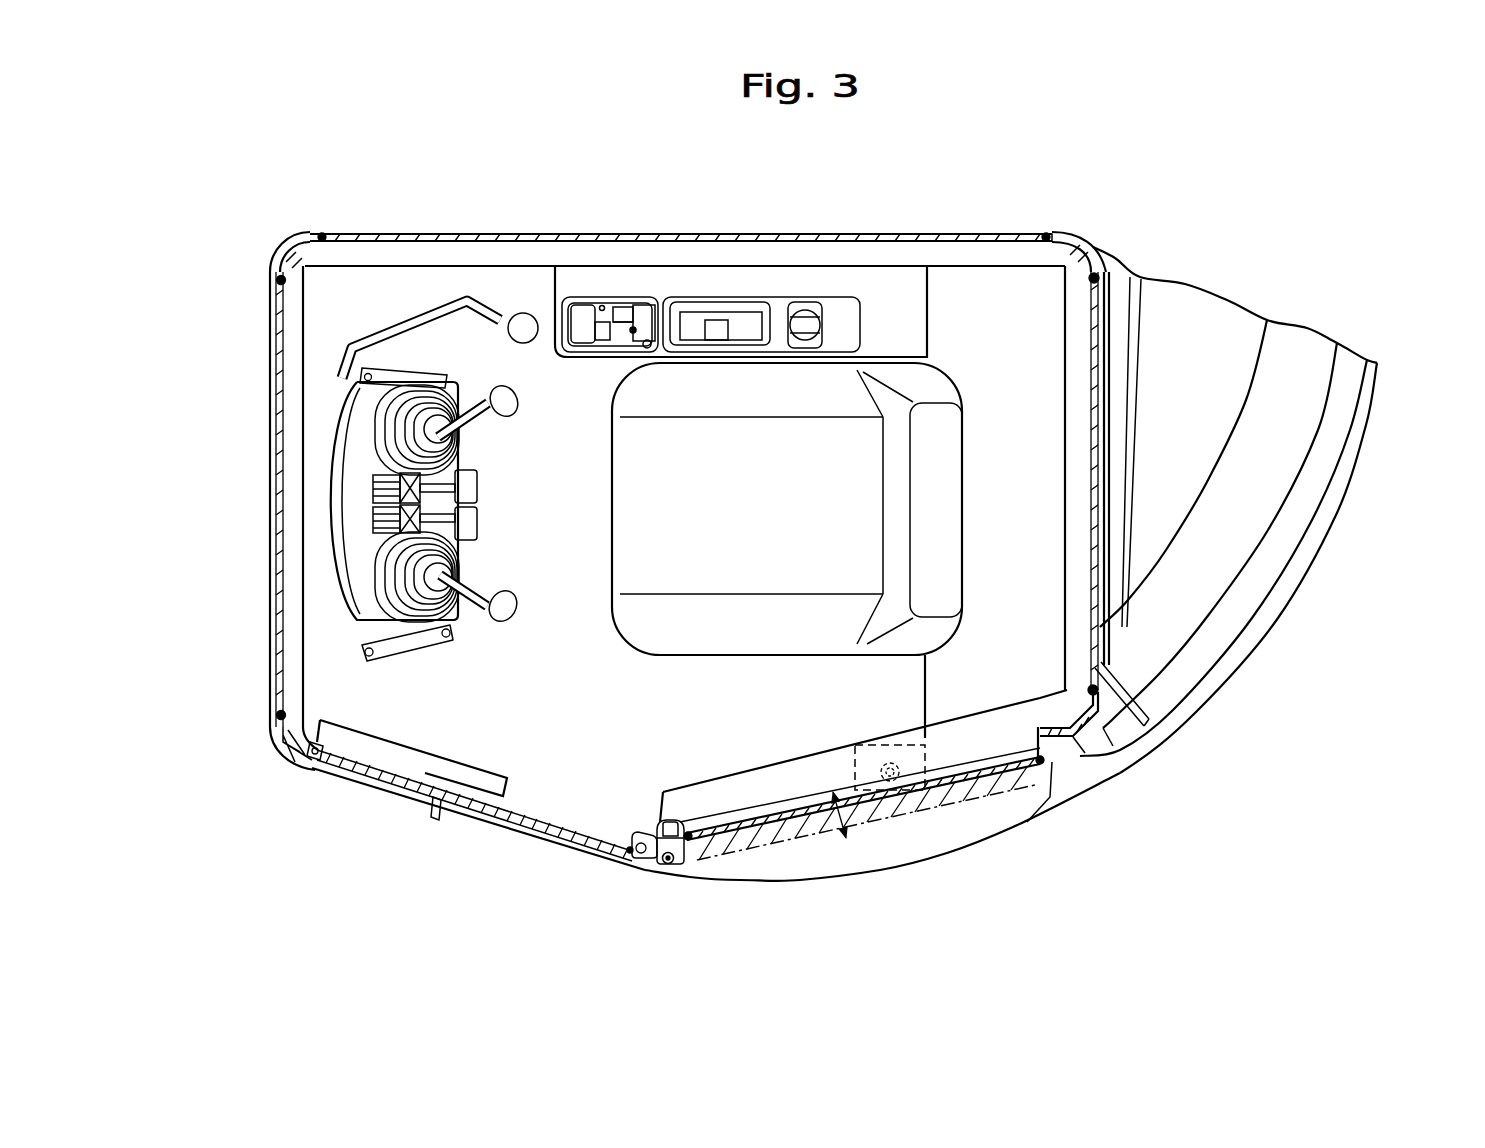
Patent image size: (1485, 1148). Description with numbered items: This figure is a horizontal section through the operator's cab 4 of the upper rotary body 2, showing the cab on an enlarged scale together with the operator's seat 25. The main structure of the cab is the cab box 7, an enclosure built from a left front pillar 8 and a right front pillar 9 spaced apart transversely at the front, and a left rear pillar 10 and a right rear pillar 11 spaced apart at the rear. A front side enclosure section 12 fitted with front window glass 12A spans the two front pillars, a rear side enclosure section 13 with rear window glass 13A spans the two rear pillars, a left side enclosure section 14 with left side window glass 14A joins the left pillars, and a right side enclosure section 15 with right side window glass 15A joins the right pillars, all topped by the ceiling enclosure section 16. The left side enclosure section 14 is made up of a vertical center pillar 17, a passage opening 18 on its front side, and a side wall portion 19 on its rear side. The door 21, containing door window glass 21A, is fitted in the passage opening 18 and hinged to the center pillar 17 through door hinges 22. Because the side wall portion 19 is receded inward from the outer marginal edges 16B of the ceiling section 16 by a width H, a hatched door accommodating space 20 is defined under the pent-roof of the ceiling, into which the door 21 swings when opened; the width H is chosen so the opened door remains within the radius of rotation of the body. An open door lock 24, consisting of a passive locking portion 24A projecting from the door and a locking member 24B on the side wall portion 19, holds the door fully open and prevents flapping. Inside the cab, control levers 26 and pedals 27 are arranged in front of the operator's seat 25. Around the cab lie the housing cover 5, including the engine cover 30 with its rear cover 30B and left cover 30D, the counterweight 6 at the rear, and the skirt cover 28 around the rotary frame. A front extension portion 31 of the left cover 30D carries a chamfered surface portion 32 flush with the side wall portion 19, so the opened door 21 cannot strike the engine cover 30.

The upper rotary body 2 is at (1292, 627).
The operator's cab 4 is at (789, 234).
The housing cover 5 is at (1315, 455).
The counterweight 6 is at (1326, 540).
The cab box 7 is at (990, 238).
The left front pillar 8 is at (276, 747).
The right front pillar 9 is at (298, 240).
The left rear pillar 10 is at (1068, 764).
The right rear pillar 11 is at (1082, 240).
The front side enclosure section 12 is at (268, 428).
The front window glass 12A is at (272, 520).
The rear side enclosure section 13 is at (1102, 358).
The rear window glass 13A is at (1103, 308).
The left side enclosure section 14 is at (648, 872).
The left side window glass 14A is at (807, 815).
The right side enclosure section 15 is at (598, 234).
The right side window glass 15A is at (692, 238).
The ceiling enclosure section 16 is at (863, 808).
The outer marginal edges of the ceiling section 16B is at (783, 845).
The center pillar 17 is at (678, 866).
The passage opening 18 is at (306, 754).
The side wall portion 19 is at (982, 792).
The door accommodating space 20 is at (740, 856).
The door 21 is at (367, 779).
The door window glass 21A is at (512, 824).
The door hinges 22 is at (666, 864).
The open door lock 24 is at (942, 766).
The passive locking portion 24A is at (433, 822).
The locking member 24B is at (888, 825).
The operator's seat 25 is at (838, 388).
The control levers 26 is at (483, 405).
The pedals 27 is at (390, 652).
The skirt cover 28 is at (574, 862).
The engine cover 30 is at (1345, 412).
The rear cover 30B is at (1295, 355).
The left cover 30D is at (1142, 724).
The front extension portion 31 is at (1112, 746).
The chamfered surface portion 32 is at (1085, 754).
The width of indentation H is at (832, 832).